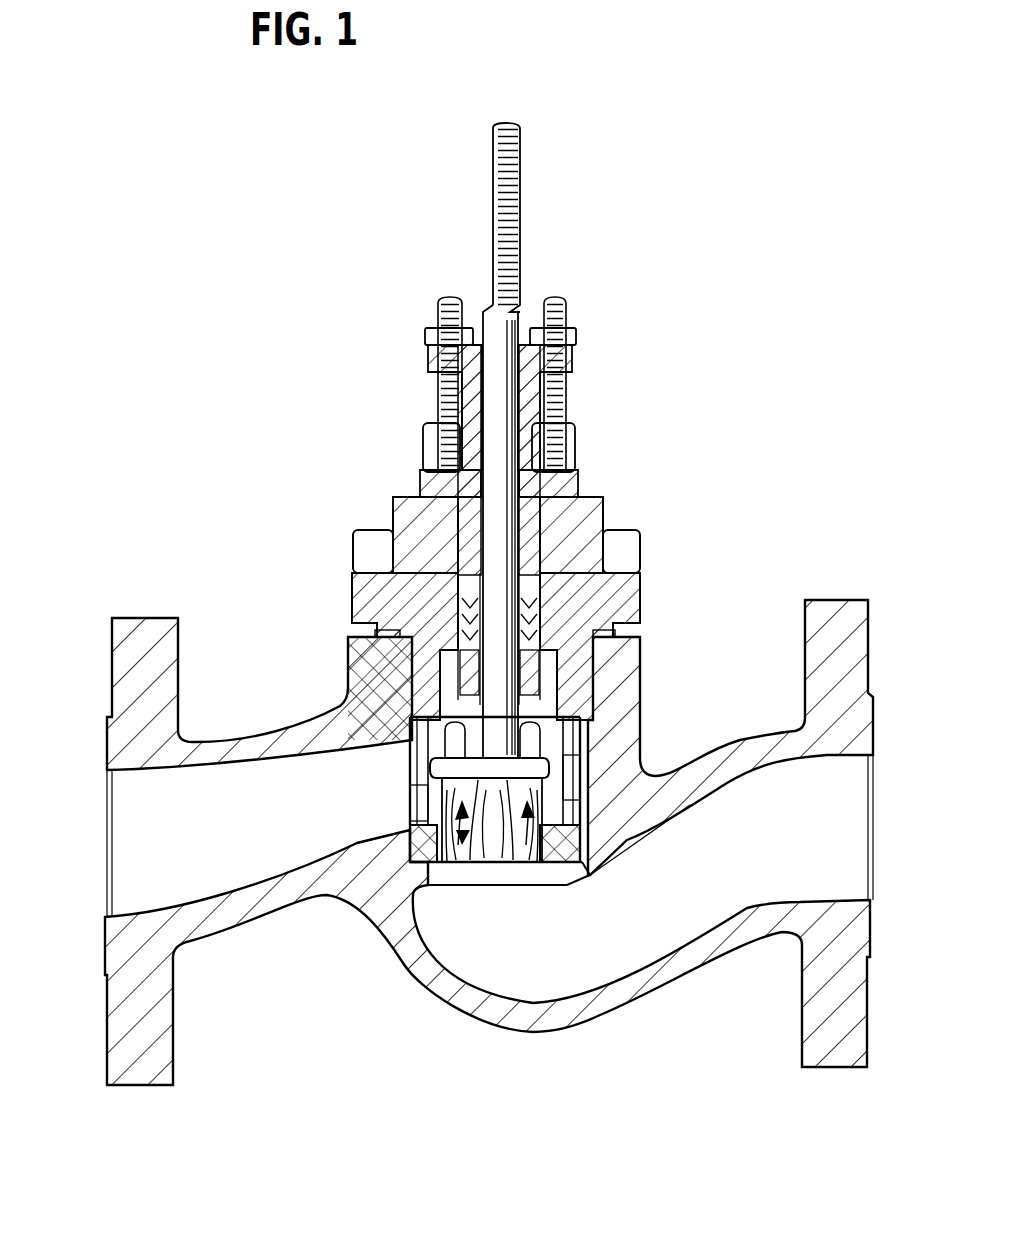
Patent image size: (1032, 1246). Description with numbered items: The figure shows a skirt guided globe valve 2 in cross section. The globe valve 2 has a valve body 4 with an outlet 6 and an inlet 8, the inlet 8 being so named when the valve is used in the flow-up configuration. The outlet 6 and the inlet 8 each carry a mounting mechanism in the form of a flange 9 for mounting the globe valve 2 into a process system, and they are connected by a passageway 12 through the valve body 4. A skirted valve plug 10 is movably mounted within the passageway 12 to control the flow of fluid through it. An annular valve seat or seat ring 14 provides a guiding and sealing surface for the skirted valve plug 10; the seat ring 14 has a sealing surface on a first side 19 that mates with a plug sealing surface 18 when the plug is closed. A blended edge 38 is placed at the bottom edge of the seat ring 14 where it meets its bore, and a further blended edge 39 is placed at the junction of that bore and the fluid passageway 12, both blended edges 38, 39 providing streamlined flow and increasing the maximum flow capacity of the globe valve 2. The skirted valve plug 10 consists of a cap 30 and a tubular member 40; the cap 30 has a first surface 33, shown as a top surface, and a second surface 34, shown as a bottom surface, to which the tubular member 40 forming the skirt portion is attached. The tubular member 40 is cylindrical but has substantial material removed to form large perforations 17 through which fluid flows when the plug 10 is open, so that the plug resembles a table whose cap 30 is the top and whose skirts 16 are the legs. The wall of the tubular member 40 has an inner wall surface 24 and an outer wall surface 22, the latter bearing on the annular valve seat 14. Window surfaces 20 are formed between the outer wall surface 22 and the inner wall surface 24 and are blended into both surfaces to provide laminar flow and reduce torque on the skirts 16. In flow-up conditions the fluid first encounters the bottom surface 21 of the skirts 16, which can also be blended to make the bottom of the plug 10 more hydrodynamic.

The skirt guided globe valve 2 is at (394, 286).
The valve body 4 is at (250, 738).
The outlet 6 is at (94, 830).
The inlet 8 is at (886, 830).
The flange 9 is at (106, 644).
The skirted valve plug 10 is at (522, 724).
The passageway 12 is at (292, 816).
The annular valve seat or seat ring 14 is at (420, 868).
The skirts 16 is at (440, 760).
The perforations 17 is at (468, 844).
The plug sealing surface 18 is at (418, 793).
The first side 19 is at (536, 866).
The window surfaces 20 is at (425, 807).
The bottom surface 21 is at (466, 836).
The outer wall surface 22 is at (421, 817).
The inner wall surface 24 is at (430, 753).
The cap 30 is at (618, 662).
The first surface 33 is at (398, 726).
The second surface 34 is at (574, 804).
The blended edge 38 is at (460, 834).
The blended edge 39 is at (450, 832).
The tubular member 40 is at (566, 742).